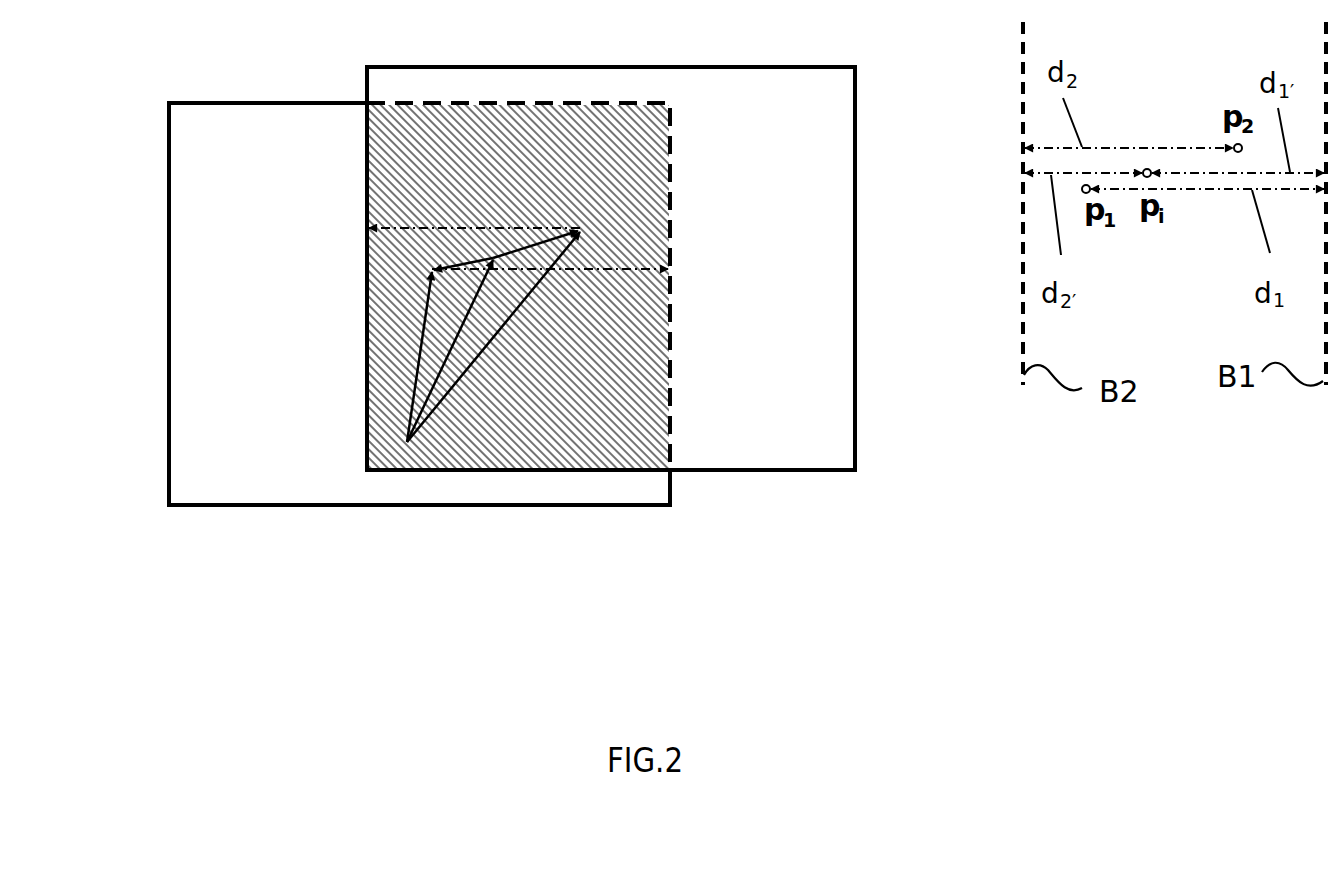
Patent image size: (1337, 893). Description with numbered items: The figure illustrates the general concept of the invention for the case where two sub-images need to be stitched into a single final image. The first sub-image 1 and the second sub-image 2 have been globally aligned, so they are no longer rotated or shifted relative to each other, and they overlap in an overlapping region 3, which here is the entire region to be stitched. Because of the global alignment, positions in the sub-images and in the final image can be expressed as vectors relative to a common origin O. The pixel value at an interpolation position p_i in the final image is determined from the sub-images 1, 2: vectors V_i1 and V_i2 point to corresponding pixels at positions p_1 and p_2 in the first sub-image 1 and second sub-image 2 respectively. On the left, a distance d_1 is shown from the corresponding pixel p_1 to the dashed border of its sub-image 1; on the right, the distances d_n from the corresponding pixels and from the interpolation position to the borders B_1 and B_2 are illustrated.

The sub-image 1 is at (169, 278).
The sub-image 2 is at (855, 350).
The overlapping region 3 is at (655, 168).